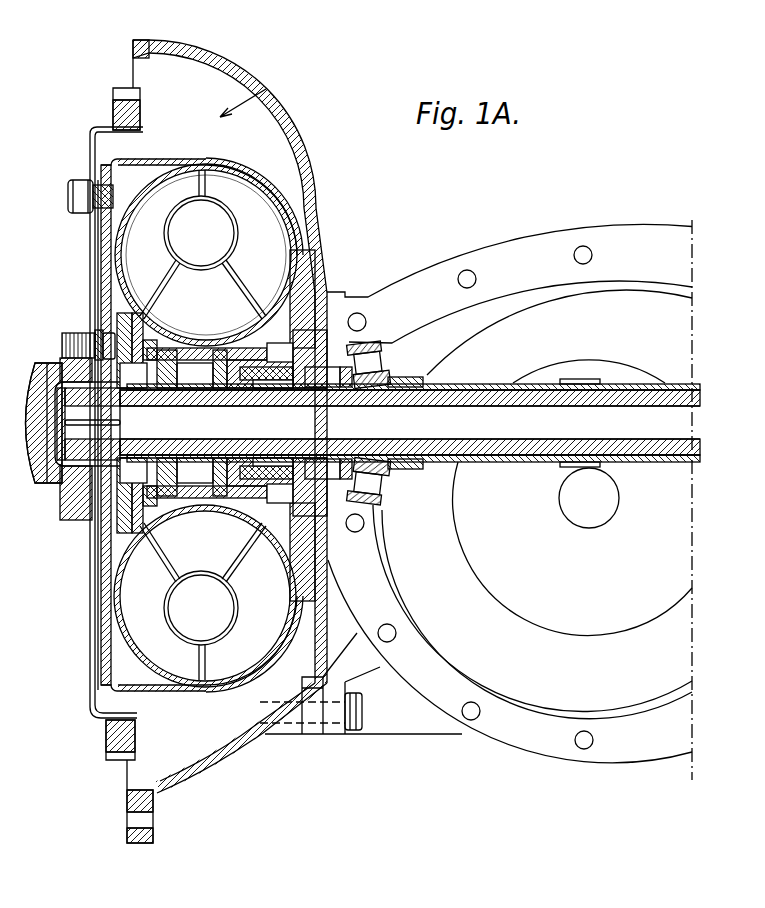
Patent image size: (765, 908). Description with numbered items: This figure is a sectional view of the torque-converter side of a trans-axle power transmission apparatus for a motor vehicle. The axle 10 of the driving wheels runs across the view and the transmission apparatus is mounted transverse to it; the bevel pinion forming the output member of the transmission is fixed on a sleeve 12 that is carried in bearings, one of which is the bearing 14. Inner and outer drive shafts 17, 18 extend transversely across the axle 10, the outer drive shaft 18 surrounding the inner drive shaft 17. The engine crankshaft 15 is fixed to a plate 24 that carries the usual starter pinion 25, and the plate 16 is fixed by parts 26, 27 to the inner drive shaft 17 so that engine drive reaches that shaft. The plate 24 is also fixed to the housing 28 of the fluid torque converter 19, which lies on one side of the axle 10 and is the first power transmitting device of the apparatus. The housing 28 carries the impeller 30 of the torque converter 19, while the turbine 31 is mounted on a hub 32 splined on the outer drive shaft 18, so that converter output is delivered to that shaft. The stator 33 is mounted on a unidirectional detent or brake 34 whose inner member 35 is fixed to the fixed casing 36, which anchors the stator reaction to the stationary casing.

The axle 10 is at (567, 505).
The sleeve 12 is at (669, 458).
The bearing 14 is at (378, 360).
The engine crankshaft 15 is at (40, 368).
The plate 16 is at (95, 270).
The inner drive shaft 17 is at (484, 430).
The outer drive shaft 18 is at (439, 448).
The fluid torque converter 19 is at (253, 98).
The plate 24 is at (97, 256).
The starter pinion 25 is at (113, 110).
The part 26 is at (70, 458).
The part 27 is at (78, 468).
The housing 28 is at (101, 152).
The impeller 30 is at (250, 215).
The turbine 31 is at (152, 250).
The hub 32 is at (118, 302).
The stator 33 is at (205, 425).
The unidirectional detent or brake 34 is at (193, 368).
The inner member 35 is at (193, 360).
The fixed casing 36 is at (286, 131).